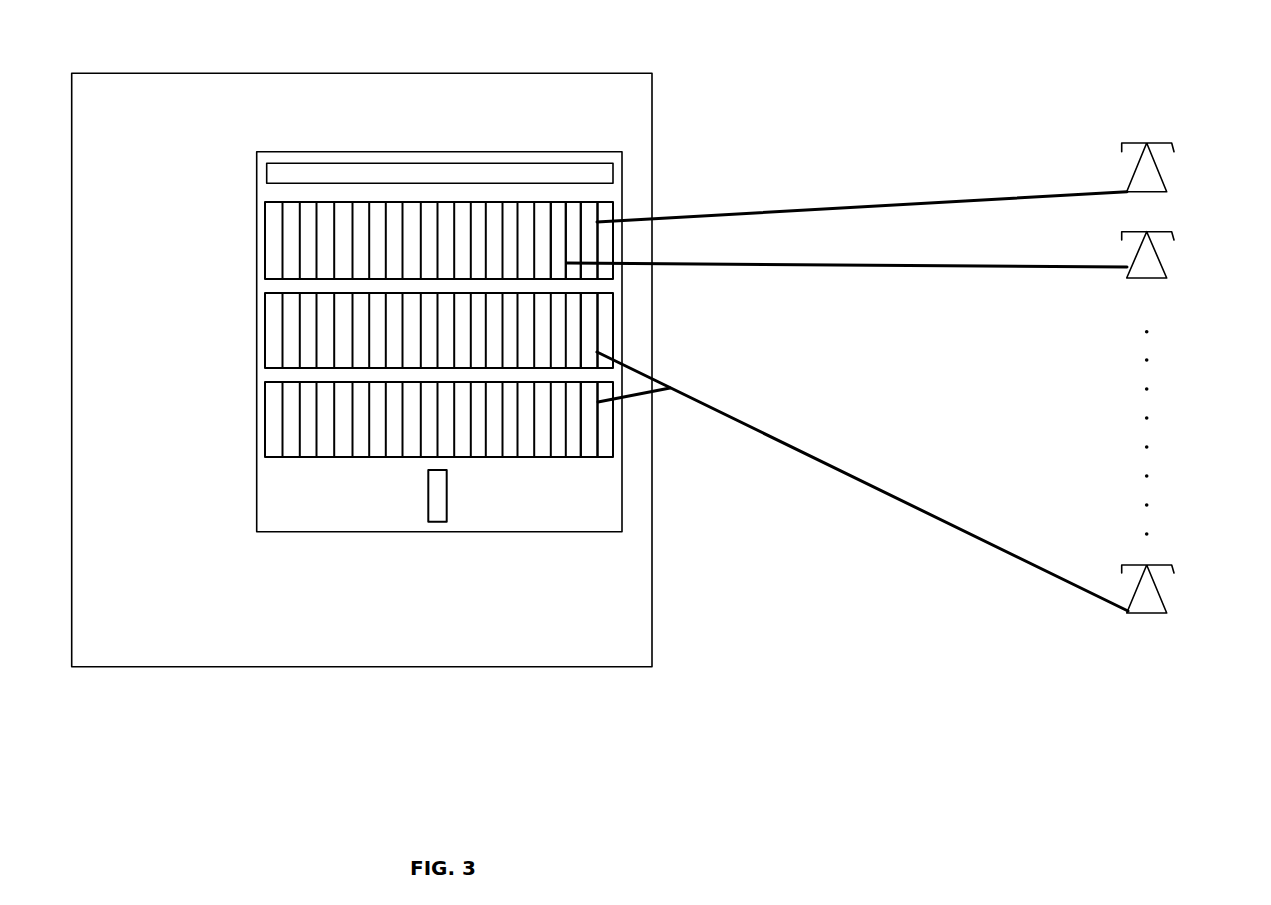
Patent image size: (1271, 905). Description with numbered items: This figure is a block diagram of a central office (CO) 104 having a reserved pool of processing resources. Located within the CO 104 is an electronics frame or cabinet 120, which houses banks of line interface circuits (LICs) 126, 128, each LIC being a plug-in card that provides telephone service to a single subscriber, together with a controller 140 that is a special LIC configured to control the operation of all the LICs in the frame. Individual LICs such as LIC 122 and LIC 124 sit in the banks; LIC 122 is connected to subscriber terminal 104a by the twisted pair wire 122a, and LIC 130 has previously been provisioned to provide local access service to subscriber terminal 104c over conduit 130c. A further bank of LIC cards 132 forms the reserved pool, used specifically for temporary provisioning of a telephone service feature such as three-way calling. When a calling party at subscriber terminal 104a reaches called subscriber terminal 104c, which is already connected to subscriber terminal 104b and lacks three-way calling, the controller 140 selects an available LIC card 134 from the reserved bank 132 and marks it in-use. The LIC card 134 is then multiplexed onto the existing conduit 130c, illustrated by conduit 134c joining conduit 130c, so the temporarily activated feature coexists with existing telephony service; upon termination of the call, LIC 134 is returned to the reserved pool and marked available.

The central office (CO) 104 is at (215, 72).
The subscriber terminal 104a is at (1167, 188).
The subscriber terminal 104b is at (1167, 275).
The subscriber terminal 104c is at (1167, 608).
The electronics frame or cabinet 120 is at (440, 152).
The line interface circuit (LIC) 122 is at (585, 212).
The twisted pair wire 122a is at (902, 203).
The line interface circuit (LIC) 124 is at (557, 222).
The bank of LICs 126 is at (263, 218).
The bank of LICs 128 is at (262, 328).
The line interface circuit (LIC) 130 is at (585, 328).
The conduit 130c is at (902, 495).
The bank of reserved LIC cards 132 is at (265, 417).
The LIC card 134 is at (585, 433).
The conduit 134c is at (637, 395).
The controller 140 is at (447, 495).